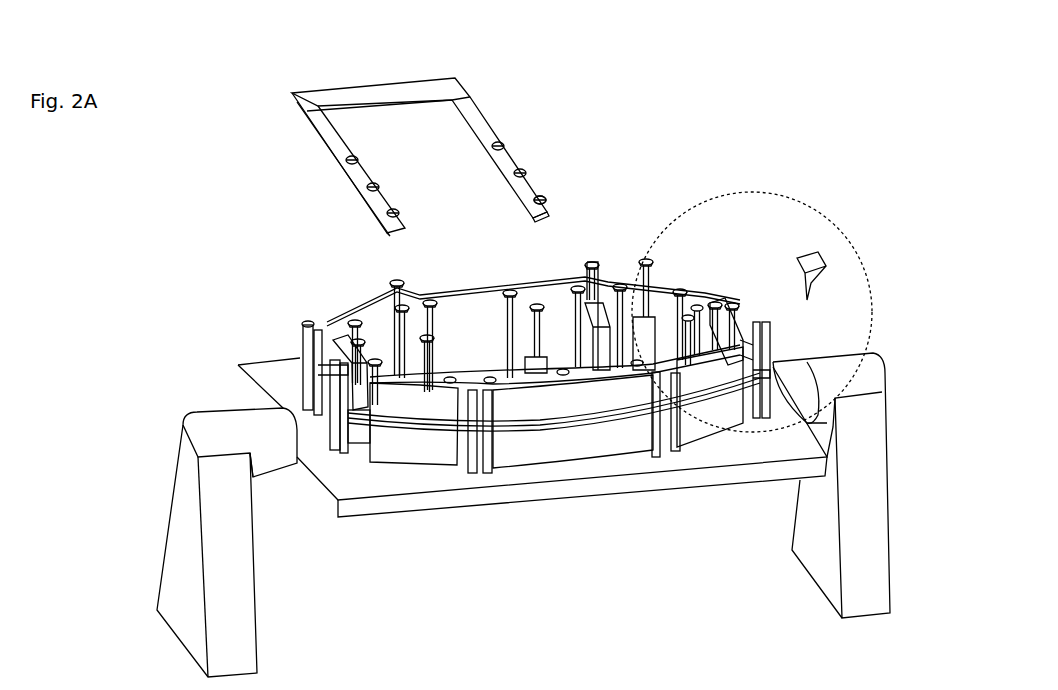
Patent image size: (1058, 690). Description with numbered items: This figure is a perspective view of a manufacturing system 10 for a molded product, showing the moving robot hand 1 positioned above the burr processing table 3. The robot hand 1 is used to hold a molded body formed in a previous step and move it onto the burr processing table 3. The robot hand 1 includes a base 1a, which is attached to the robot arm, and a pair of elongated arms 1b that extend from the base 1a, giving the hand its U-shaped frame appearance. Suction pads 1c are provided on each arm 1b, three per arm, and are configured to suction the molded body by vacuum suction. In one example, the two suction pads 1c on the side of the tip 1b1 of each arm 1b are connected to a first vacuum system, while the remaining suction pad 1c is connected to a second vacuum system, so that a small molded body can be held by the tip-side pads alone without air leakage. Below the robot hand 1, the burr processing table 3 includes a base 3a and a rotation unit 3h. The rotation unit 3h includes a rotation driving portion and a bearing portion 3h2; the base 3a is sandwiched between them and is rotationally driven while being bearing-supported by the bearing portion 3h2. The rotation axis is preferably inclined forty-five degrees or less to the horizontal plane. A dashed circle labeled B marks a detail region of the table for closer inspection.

The manufacturing system 10 is at (678, 77).
The moving robot hand 1 is at (286, 179).
The base 1a is at (368, 88).
The arm 1b is at (342, 137).
The tip 1b1 is at (545, 213).
The suction pad 1c is at (542, 198).
The burr processing table 3 is at (244, 336).
The base 3a is at (440, 497).
The rotation unit 3h is at (906, 378).
The bearing portion 3h2 is at (226, 395).
The detail region B is at (752, 295).